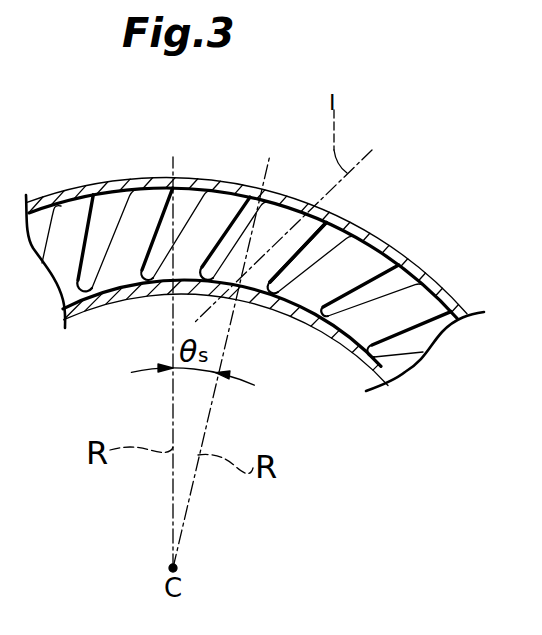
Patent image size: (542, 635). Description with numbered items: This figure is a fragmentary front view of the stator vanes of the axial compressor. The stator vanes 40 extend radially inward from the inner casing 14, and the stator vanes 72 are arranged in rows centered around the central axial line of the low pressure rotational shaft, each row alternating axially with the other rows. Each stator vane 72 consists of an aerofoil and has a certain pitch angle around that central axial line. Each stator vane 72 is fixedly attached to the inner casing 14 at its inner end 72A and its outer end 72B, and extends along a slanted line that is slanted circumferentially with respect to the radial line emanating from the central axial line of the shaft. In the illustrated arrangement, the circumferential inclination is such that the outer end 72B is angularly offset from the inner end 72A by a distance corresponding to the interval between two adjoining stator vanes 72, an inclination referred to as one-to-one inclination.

The inner casing 14 is at (442, 287).
The stator vane 72 is at (213, 208).
The inner end 72A is at (252, 305).
The outer end 72B is at (333, 203).
The stator vanes 40 is at (304, 247).